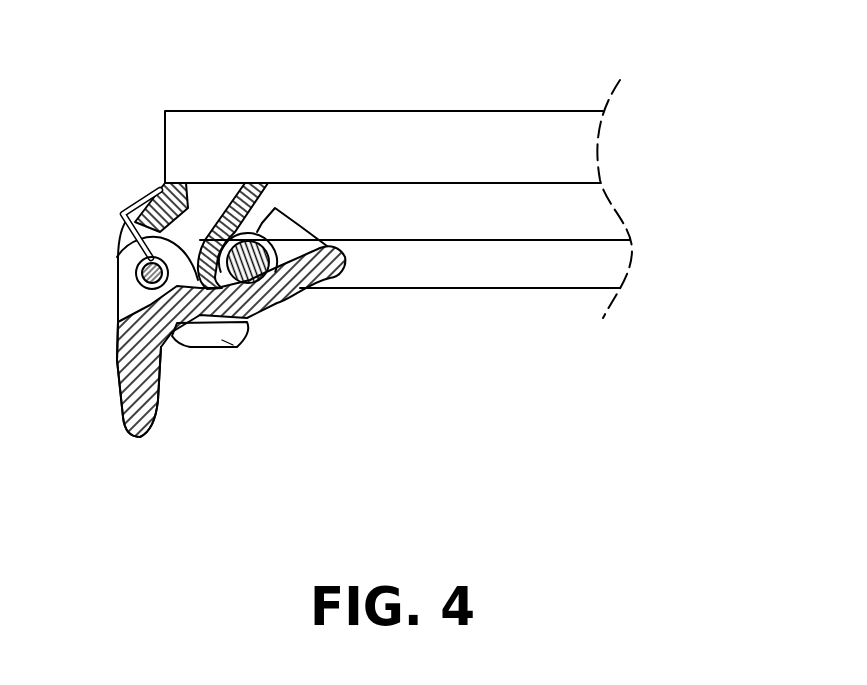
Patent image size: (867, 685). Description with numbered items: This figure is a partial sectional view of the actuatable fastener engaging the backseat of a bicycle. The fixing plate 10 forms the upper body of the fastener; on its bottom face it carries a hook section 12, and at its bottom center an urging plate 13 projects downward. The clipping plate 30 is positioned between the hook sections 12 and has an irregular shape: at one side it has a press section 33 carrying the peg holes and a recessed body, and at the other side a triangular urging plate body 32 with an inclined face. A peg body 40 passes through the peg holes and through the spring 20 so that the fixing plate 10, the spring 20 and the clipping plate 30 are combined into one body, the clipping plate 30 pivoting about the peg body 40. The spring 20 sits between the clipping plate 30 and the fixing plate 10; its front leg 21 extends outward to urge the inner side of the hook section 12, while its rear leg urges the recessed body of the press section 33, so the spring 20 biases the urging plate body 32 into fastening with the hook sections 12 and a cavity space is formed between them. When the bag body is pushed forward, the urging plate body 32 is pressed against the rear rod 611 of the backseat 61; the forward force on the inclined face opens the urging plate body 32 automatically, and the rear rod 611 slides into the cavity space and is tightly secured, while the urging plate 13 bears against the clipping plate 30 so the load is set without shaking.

The fixing plate 10 is at (175, 187).
The hook section 12 is at (237, 343).
The urging plate 13 is at (202, 265).
The spring 20 is at (137, 292).
The front leg 21 is at (148, 190).
The clipping plate 30 is at (285, 305).
The urging plate body 32 is at (290, 233).
The press section 33 is at (157, 407).
The peg body 40 is at (137, 266).
The backseat 61 is at (530, 267).
The rear rod 611 is at (303, 287).